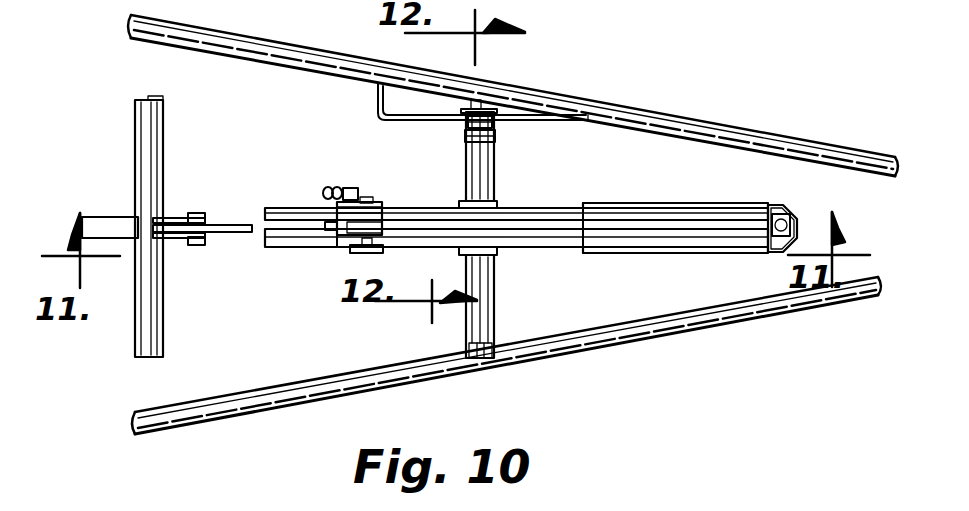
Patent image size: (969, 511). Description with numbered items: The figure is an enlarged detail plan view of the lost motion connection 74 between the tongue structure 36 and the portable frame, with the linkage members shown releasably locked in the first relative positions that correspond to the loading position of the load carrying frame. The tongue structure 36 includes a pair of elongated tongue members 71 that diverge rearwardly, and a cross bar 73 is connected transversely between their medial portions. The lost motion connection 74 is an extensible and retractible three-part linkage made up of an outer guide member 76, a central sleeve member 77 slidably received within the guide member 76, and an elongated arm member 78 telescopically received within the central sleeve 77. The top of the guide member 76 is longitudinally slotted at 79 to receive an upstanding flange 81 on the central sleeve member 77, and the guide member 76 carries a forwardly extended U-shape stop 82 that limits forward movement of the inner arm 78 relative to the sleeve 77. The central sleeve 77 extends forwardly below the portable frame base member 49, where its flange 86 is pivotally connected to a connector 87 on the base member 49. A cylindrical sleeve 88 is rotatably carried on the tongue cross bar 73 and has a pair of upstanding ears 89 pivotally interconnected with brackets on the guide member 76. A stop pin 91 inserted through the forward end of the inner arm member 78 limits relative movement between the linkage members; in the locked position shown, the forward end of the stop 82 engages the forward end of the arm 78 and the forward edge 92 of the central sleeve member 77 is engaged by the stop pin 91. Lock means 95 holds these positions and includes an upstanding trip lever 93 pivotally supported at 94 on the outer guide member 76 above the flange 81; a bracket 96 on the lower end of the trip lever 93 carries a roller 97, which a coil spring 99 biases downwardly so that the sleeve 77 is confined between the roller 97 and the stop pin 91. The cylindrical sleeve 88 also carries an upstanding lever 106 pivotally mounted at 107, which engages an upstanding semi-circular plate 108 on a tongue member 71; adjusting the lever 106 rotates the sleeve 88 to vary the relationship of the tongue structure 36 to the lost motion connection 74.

The tongue structure 36 is at (752, 126).
The tongue members 71 is at (815, 145).
The forward transverse base member 49 is at (140, 118).
The cylindrical sleeve 88 is at (469, 340).
The cross bar 73 is at (487, 108).
The semi-circular plate 108 is at (523, 118).
The pivot of lever on sleeve 107 is at (468, 124).
The upstanding lever 106 is at (468, 136).
The upstanding ears 89 is at (496, 205).
The outer guide member 76 is at (560, 209).
The central sleeve member 77 is at (243, 240).
The longitudinal slot 79 is at (522, 231).
The elongated arm member 78 is at (100, 221).
The connector 87 is at (189, 212).
The flange 86 is at (237, 218).
The trip lever 93 is at (372, 226).
The bracket 96 is at (335, 200).
The coil spring 99 is at (345, 190).
The roller 97 is at (330, 233).
The pivot of trip lever 94 is at (362, 253).
The lock means 95 is at (333, 266).
The U-shape stop 82 is at (708, 206).
The upstanding flange 81 is at (652, 233).
The lost motion connection 74 is at (657, 192).
The stop pin 91 is at (800, 222).
The forward edge 92 is at (782, 216).